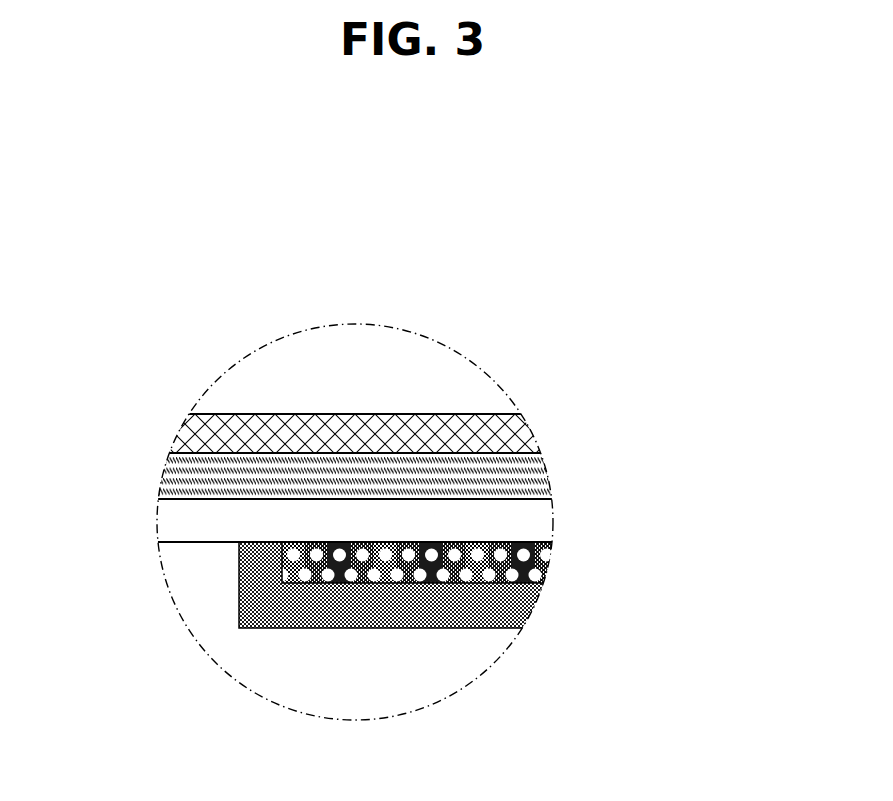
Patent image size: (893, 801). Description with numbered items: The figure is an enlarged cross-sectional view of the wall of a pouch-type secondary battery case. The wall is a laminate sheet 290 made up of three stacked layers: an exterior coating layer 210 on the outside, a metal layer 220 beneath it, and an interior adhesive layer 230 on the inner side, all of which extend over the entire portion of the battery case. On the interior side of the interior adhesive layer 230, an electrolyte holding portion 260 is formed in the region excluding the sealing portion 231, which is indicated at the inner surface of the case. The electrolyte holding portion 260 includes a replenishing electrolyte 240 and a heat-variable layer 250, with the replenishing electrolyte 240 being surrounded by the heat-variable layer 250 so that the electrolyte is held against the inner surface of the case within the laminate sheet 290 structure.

The exterior coating layer 210 is at (542, 427).
The metal layer 220 is at (545, 470).
The interior adhesive layer 230 is at (527, 515).
The sealing portion 231 is at (182, 557).
The replenishing electrolyte 240 is at (540, 555).
The heat-variable layer 250 is at (532, 597).
The electrolyte holding portion 260 is at (504, 590).
The laminate sheet 290 is at (107, 340).